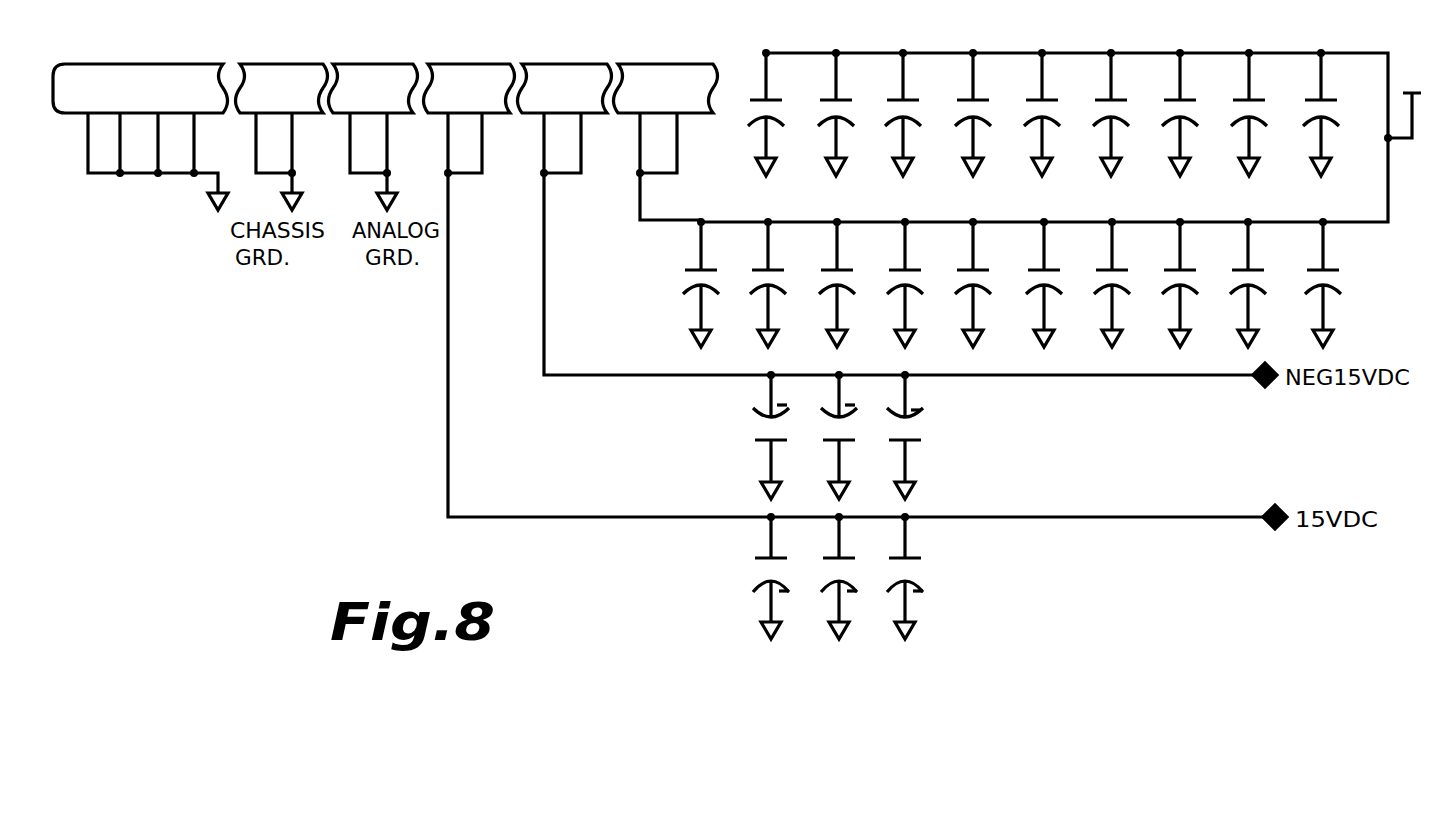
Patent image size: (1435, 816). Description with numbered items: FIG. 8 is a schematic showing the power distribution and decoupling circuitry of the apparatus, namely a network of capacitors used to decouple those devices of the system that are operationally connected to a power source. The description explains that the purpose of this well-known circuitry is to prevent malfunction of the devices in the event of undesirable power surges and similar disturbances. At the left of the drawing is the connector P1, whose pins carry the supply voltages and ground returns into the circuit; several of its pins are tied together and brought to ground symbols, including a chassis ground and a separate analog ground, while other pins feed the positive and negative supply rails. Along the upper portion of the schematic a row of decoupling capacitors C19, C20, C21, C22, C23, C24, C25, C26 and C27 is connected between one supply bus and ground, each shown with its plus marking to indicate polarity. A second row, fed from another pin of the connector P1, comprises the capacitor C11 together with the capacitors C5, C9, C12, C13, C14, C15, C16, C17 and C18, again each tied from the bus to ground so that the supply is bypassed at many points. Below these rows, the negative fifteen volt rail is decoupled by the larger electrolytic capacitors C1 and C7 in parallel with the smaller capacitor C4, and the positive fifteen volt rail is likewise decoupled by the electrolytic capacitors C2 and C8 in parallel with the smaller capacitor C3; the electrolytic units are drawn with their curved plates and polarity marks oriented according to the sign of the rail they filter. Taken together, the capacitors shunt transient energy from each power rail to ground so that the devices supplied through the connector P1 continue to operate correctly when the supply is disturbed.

The connector P1 is at (385, 71).
The 47 uF 35V electrolytic capacitor C1 is at (790, 435).
The 47 uF 35V electrolytic capacitor C2 is at (791, 576).
The 0.1 uF capacitor C3 is at (936, 576).
The 0.1 uF capacitor C4 is at (932, 435).
The 0.1 uF capacitor C5 is at (784, 295).
The 47 uF 35V electrolytic capacitor C7 is at (858, 435).
The 47 uF 35V electrolytic capacitor C8 is at (859, 576).
The 0.1 uF capacitor C9 is at (853, 295).
The 15 uF 20V electrolytic capacitor C11 is at (717, 295).
The 0.1 uF capacitor C12 is at (921, 295).
The 0.1 uF capacitor C13 is at (989, 295).
The 0.1 uF capacitor C14 is at (1060, 295).
The 0.1 uF capacitor C15 is at (1128, 295).
The 0.1 uF capacitor C16 is at (1196, 295).
The 0.1 uF capacitor C17 is at (1264, 295).
The 0.1 uF capacitor C18 is at (1340, 295).
The 0.1 uF capacitor C19 is at (782, 127).
The 0.1 uF capacitor C20 is at (852, 127).
The 0.1 uF capacitor C21 is at (919, 127).
The 0.1 uF capacitor C22 is at (989, 127).
The 0.1 uF capacitor C23 is at (1058, 127).
The 0.1 uF capacitor C24 is at (1127, 127).
The 0.1 uF capacitor C25 is at (1196, 127).
The 0.1 uF capacitor C26 is at (1265, 127).
The 0.1 uF capacitor C27 is at (1337, 127).